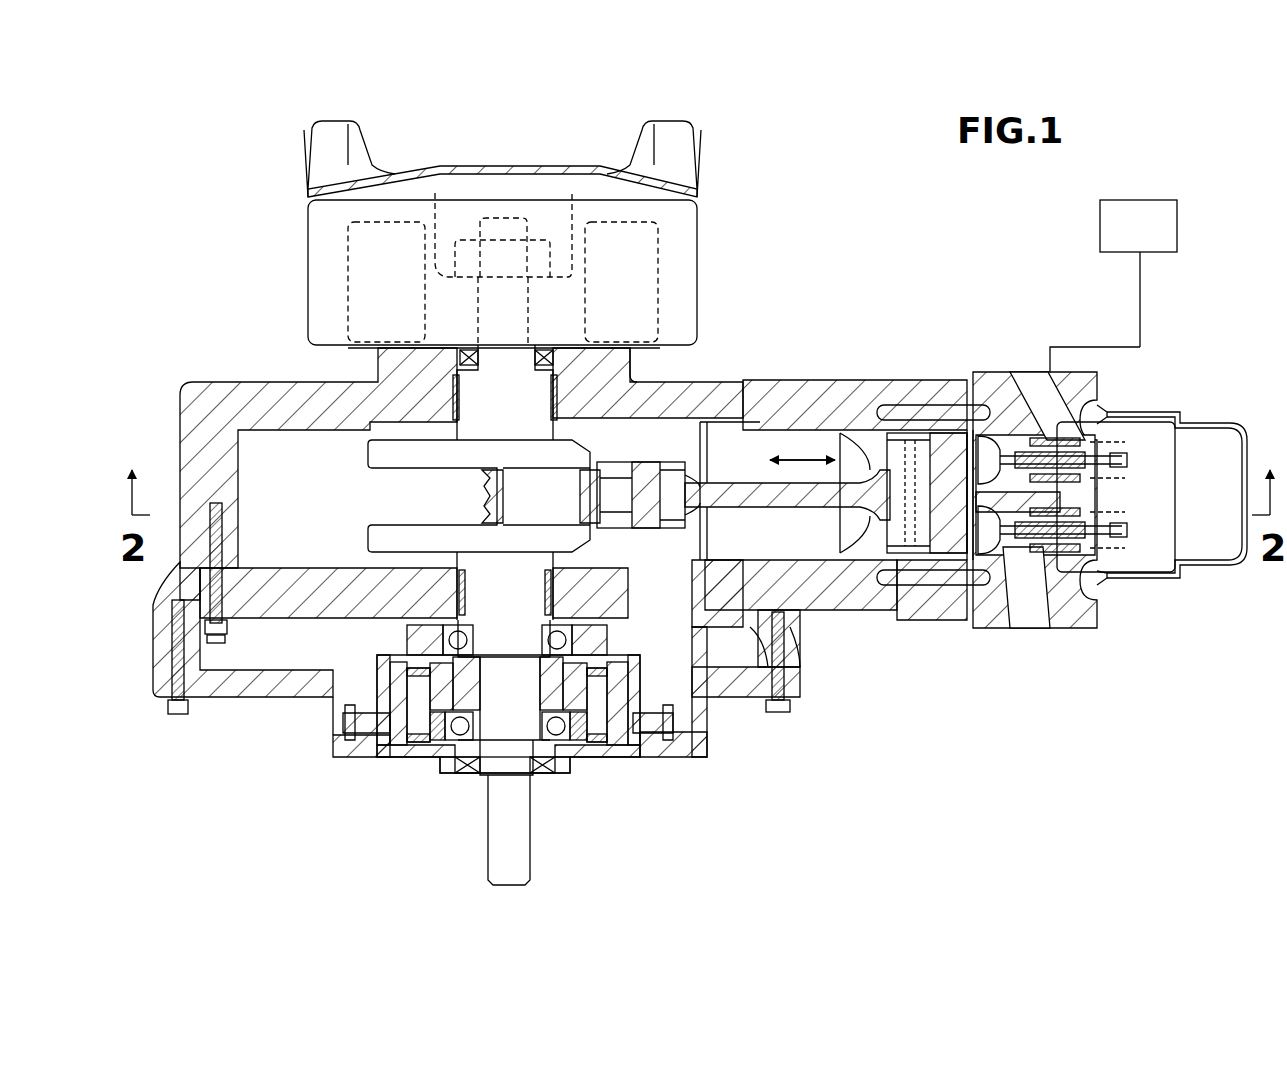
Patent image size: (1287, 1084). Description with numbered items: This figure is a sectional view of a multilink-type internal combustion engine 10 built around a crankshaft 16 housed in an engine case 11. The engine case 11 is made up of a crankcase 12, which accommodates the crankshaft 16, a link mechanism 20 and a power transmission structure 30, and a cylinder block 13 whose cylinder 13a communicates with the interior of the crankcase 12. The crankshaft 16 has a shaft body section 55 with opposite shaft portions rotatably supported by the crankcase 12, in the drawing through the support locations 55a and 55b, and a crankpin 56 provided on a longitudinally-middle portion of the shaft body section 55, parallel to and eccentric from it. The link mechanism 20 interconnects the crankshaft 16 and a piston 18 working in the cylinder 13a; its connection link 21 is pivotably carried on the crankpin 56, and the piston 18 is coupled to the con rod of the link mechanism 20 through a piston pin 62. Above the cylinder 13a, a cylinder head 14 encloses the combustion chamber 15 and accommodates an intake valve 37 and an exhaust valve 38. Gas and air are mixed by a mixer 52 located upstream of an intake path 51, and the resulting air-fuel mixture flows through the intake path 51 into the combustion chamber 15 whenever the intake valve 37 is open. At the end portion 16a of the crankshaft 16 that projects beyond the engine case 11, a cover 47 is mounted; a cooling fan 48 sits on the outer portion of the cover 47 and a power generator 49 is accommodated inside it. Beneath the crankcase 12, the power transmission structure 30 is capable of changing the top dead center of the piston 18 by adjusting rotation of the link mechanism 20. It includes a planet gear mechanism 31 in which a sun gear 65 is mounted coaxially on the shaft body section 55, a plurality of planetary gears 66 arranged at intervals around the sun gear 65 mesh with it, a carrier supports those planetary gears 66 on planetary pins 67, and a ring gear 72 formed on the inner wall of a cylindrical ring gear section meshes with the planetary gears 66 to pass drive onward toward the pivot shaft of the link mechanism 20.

The multilink-type internal combustion engine 10 is at (830, 272).
The engine case 11 is at (843, 367).
The crankcase 12 is at (278, 700).
The cylinder block 13 is at (890, 615).
The cylinder 13a is at (826, 605).
The cylinder head 14 is at (998, 625).
The combustion chamber 15 is at (968, 600).
The crankshaft 16 is at (588, 438).
The end portion 16a is at (535, 292).
The piston 18 is at (948, 440).
The link mechanism 20 is at (676, 454).
The connection link 21 is at (605, 456).
The power transmission structure 30 is at (650, 690).
The planet gear mechanism 31 is at (643, 742).
The intake valve 37 is at (1020, 440).
The exhaust valve 38 is at (1010, 547).
The cover 47 is at (318, 252).
The cooling fan 48 is at (680, 145).
The power generator 49 is at (348, 299).
The intake path 51 is at (1095, 390).
The mixer 52 is at (1140, 208).
The shaft body section 55 is at (505, 672).
The upper bearing 55a is at (455, 400).
The lower bearing 55b is at (455, 605).
The crankpin 56 is at (488, 500).
The piston pin 62 is at (910, 440).
The sun gear 65 is at (556, 690).
The planetary gears 66 is at (390, 705).
The planetary pins 67 is at (420, 738).
The ring gear 72 is at (380, 690).